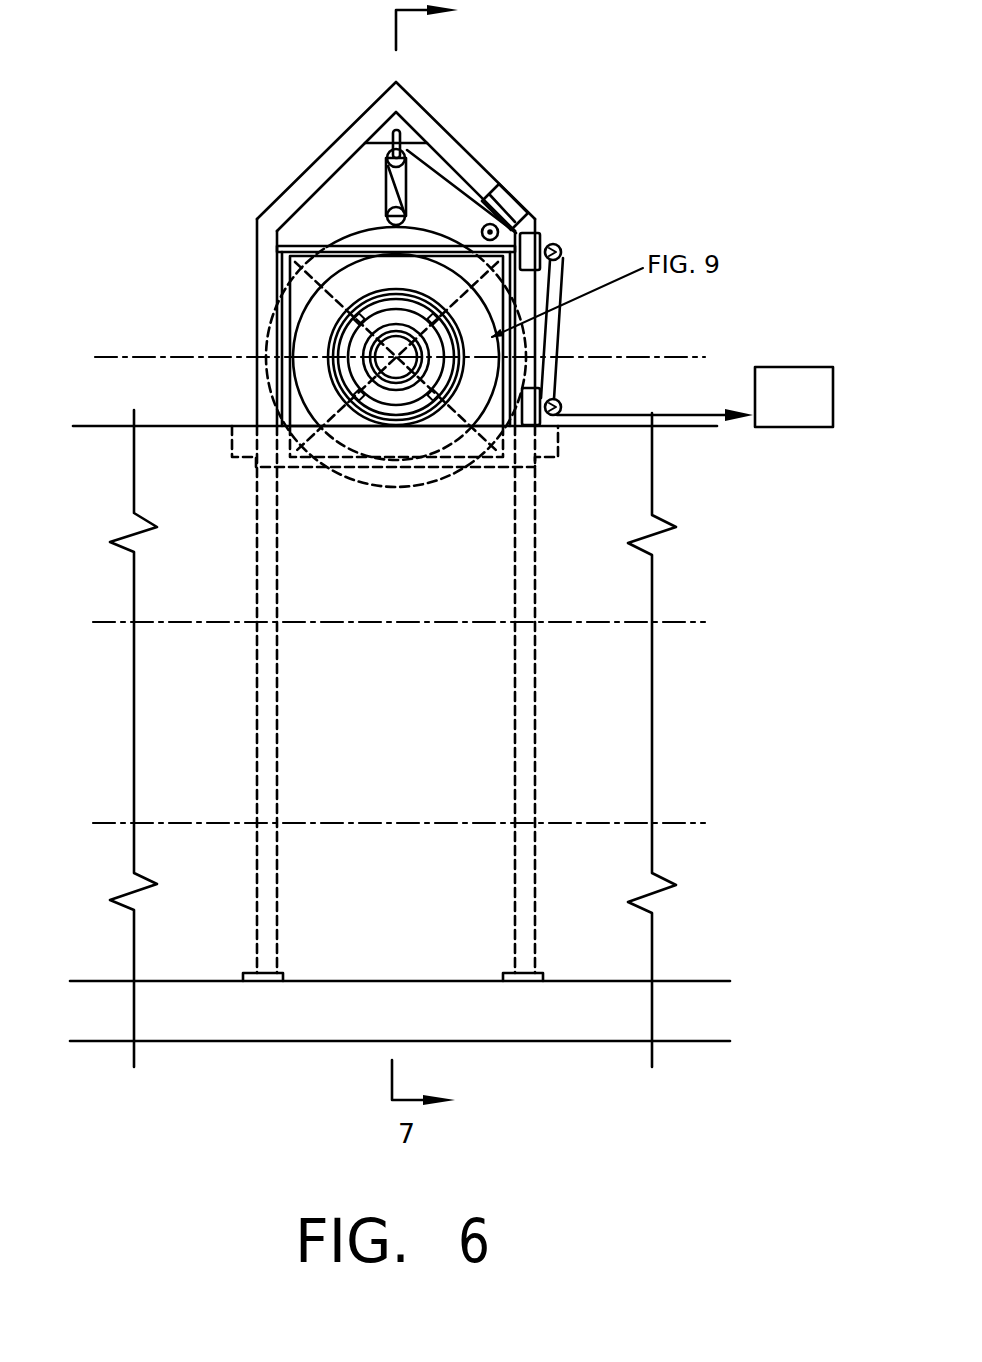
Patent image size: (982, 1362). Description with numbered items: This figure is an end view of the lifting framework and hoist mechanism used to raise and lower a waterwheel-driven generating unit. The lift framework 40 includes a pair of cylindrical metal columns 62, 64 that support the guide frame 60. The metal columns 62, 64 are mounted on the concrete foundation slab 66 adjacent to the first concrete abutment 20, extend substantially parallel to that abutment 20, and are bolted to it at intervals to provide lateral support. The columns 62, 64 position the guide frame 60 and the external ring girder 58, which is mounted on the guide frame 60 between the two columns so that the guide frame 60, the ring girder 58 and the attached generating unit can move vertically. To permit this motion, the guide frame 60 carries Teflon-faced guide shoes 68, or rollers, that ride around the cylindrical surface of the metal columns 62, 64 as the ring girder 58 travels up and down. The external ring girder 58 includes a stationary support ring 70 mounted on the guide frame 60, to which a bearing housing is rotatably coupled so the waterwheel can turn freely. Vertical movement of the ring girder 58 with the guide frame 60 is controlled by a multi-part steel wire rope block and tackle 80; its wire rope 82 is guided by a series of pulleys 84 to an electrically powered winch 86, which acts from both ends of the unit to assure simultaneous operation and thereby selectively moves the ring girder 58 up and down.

The first concrete abutment 20 is at (233, 1027).
The lift framework 40 is at (294, 178).
The external ring girder 58 is at (455, 375).
The guide frame 60 is at (268, 378).
The cylindrical metal column 62 is at (533, 658).
The cylindrical metal column 64 is at (253, 548).
The concrete foundation slab 66 is at (572, 1025).
The guide shoes 68 is at (269, 248).
The stationary support ring 70 is at (368, 437).
The wire rope block and tackle 80 is at (586, 244).
The wire rope 82 is at (618, 417).
The pulleys 84 is at (405, 150).
The electrically powered winch 86 is at (791, 367).